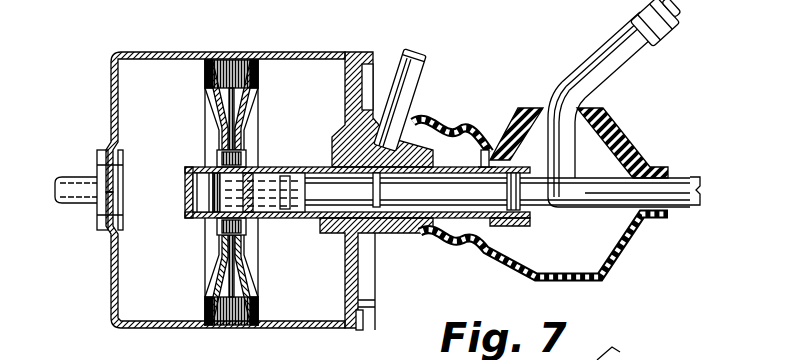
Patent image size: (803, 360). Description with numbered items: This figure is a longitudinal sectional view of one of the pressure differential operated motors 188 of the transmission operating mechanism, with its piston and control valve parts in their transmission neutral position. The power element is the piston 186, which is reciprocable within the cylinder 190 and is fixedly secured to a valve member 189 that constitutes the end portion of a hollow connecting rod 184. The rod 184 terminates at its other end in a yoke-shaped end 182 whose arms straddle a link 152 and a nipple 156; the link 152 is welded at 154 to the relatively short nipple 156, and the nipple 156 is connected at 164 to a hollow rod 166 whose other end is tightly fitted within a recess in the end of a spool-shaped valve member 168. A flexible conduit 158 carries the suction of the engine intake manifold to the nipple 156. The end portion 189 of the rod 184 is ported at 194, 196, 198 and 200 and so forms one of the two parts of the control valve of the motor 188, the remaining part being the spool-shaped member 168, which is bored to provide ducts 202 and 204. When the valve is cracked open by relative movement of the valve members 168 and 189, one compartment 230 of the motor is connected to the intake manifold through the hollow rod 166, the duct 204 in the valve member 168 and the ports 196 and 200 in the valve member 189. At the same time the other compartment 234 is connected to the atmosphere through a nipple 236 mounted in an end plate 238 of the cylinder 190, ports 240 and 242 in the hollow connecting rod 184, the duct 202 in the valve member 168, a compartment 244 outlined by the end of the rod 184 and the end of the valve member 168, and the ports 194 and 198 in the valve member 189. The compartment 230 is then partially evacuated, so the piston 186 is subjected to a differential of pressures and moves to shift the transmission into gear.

The link 152 is at (612, 190).
The weld 154 is at (572, 182).
The nipple 156 is at (606, 63).
The flexible conduit 158 is at (657, 38).
The connection 164 is at (527, 212).
The hollow rod 166 is at (325, 195).
The spool-shaped valve member 168 is at (220, 220).
The yoke-shaped end 182 is at (676, 176).
The hollow connecting rod 184 is at (300, 218).
The piston 186 is at (207, 88).
The pressure differential operated motor 188 is at (248, 56).
The valve member 189 is at (248, 152).
The cylinder 190 is at (147, 53).
The port 194 is at (205, 165).
The port 196 is at (258, 168).
The port 198 is at (212, 220).
The port 200 is at (258, 218).
The duct 202 is at (181, 184).
The duct 204 is at (357, 181).
The compartment 230 is at (320, 68).
The compartment 234 is at (128, 290).
The nipple 236 is at (428, 72).
The end plate 238 is at (380, 236).
The port 240 is at (482, 165).
The port 242 is at (483, 216).
The compartment 244 is at (190, 200).